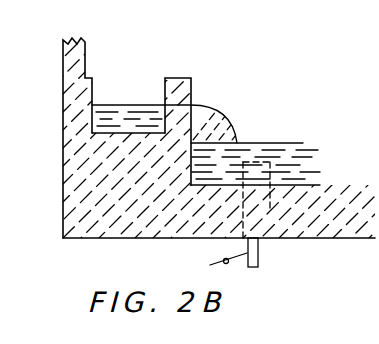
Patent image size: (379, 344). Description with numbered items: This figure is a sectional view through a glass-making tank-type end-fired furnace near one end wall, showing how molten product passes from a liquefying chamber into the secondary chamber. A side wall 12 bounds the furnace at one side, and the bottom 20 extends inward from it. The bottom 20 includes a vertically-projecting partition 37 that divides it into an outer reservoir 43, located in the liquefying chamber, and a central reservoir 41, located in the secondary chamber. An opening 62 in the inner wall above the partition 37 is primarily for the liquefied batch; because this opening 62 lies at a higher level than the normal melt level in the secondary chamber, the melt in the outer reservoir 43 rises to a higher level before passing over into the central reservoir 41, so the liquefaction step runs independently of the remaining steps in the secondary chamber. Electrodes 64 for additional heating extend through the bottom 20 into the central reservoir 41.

The side wall 12 is at (52, 138).
The bottom 20 is at (189, 139).
The outer reservoir 43 is at (141, 87).
The partition 37 is at (215, 118).
The opening 62 is at (228, 113).
The central reservoir 41 is at (257, 141).
The electrodes 64 is at (311, 187).